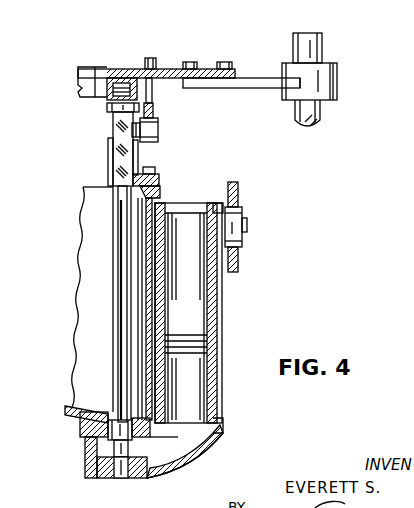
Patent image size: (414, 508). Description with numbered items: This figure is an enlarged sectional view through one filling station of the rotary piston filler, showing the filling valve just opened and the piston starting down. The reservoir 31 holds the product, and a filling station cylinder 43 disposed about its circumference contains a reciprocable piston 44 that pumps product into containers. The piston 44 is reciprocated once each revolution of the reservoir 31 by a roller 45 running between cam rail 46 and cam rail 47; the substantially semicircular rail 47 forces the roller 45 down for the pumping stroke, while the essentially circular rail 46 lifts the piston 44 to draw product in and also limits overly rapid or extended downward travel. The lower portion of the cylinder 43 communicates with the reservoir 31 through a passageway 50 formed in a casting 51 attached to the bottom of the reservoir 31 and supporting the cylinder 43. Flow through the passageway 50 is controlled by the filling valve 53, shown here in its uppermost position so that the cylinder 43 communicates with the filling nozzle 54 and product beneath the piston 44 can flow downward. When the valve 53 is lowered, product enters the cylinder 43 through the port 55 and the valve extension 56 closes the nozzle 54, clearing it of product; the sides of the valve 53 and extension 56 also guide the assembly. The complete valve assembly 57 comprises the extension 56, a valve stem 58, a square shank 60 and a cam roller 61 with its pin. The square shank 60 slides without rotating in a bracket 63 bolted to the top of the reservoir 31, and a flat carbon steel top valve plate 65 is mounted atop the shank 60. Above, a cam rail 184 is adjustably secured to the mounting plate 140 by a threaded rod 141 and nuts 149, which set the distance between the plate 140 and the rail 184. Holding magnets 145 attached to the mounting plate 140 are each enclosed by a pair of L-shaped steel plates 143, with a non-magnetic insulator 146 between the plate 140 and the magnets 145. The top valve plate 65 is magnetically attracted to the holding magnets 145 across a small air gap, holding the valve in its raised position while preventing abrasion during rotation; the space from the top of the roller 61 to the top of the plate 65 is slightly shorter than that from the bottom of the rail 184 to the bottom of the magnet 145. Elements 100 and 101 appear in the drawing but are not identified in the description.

The reservoir 31 is at (104, 308).
The filling station cylinder 43 is at (207, 408).
The piston 44 is at (207, 243).
The roller 45 is at (244, 214).
The cam rail 46 is at (240, 258).
The cam rail 47 is at (239, 190).
The passageway 50 is at (222, 438).
The casting 51 is at (178, 462).
The filling valve 53 is at (108, 436).
The filling nozzle 54 is at (120, 479).
The port 55 is at (112, 415).
The valve extension 56 is at (114, 450).
The valve assembly 57 is at (118, 292).
The valve stem 58 is at (120, 250).
The square shank 60 is at (128, 161).
The cam roller 61 is at (160, 138).
The bracket 63 is at (110, 165).
The top valve plate 65 is at (108, 136).
The box 100 is at (338, 80).
The shaft 101 is at (318, 47).
The mounting plate 140 is at (113, 77).
The threaded rod 141 is at (153, 58).
The L-shaped steel plate 143 is at (108, 107).
The holding magnet 145 is at (108, 91).
The insulator 146 is at (85, 80).
The nut 149 is at (157, 79).
The cam rail 184 is at (158, 122).